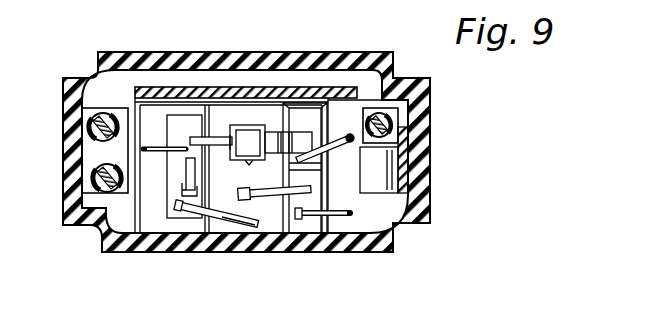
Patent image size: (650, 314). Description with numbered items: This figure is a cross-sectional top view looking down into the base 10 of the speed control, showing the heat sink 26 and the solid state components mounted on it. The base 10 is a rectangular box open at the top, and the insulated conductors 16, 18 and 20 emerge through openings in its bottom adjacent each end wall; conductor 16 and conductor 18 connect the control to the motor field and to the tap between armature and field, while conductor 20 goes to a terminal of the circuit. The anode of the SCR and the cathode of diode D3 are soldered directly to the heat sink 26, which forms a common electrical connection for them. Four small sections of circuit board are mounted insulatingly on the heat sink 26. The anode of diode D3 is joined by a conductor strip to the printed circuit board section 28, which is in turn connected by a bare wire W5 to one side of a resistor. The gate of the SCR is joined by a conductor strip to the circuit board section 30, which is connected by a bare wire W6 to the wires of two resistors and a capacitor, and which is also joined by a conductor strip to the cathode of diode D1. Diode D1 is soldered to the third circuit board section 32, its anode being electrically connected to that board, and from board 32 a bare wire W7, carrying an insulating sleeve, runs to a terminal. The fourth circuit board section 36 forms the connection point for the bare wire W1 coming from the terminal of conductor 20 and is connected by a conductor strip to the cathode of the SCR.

The base 10 is at (113, 53).
The insulated conductor 16 is at (82, 128).
The insulated conductor 18 is at (97, 172).
The insulated conductor 20 is at (398, 128).
The heat sink 26 is at (140, 216).
The printed circuit board section 28 is at (297, 219).
The circuit board section 30 is at (179, 118).
The circuit board section 32 is at (181, 218).
The circuit board section 36 is at (300, 120).
The silicon controlled rectifier SCR is at (245, 122).
The diode D1 is at (170, 222).
The diode D3 is at (258, 230).
The bare wire W1 is at (344, 144).
The bare wire W5 is at (355, 216).
The bare wire W6 is at (152, 153).
The bare wire W7 is at (227, 223).